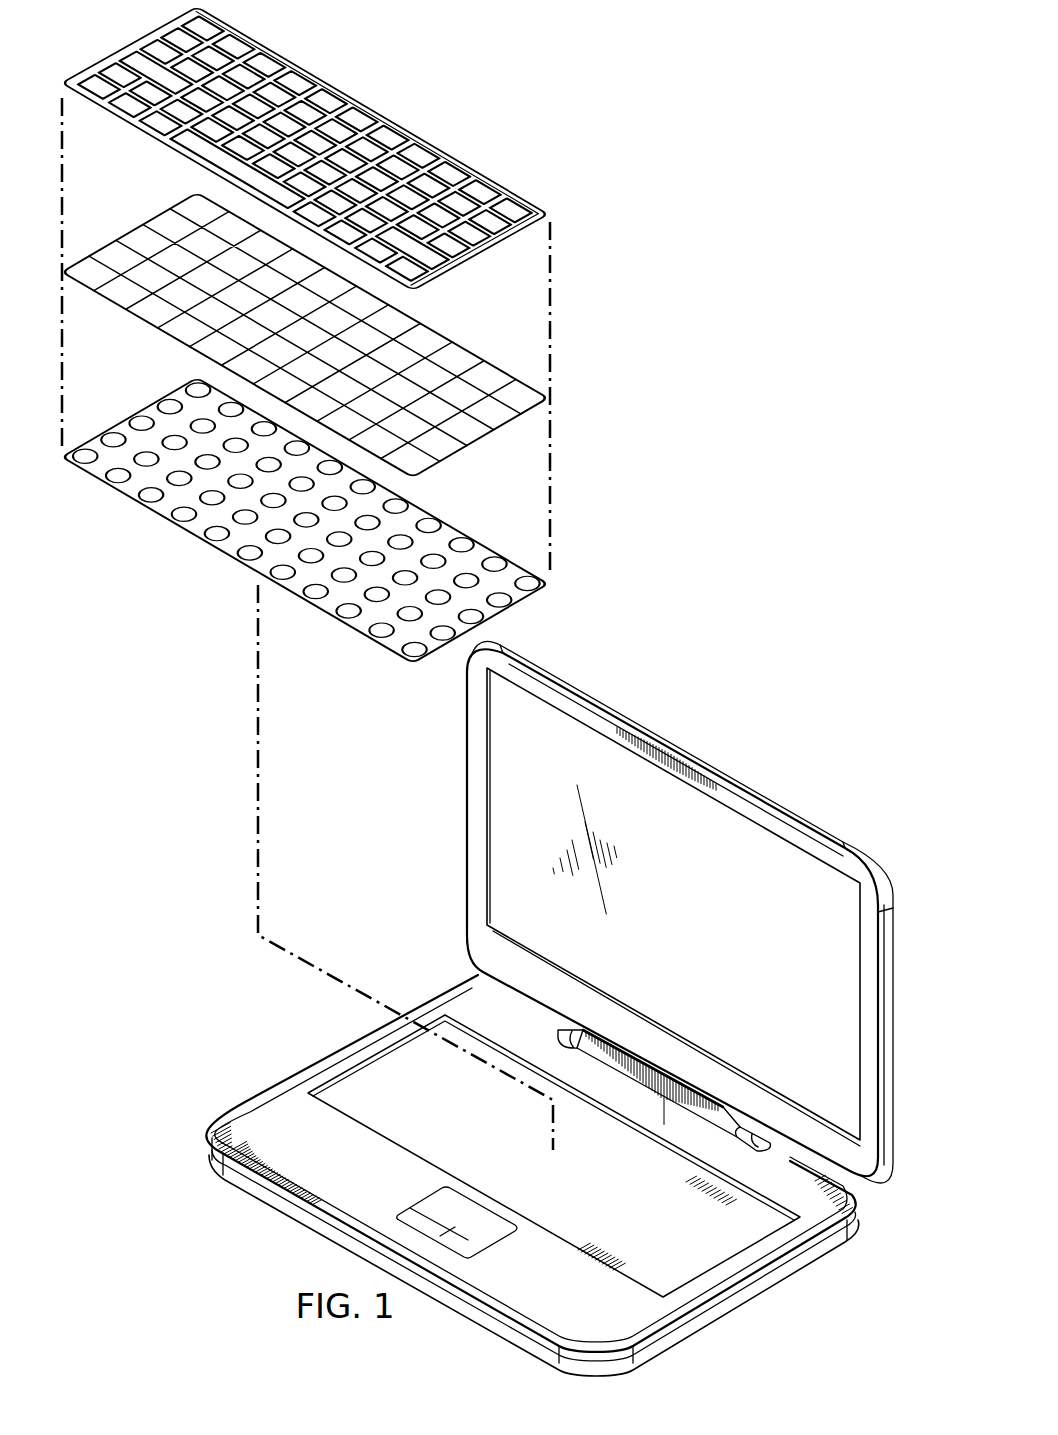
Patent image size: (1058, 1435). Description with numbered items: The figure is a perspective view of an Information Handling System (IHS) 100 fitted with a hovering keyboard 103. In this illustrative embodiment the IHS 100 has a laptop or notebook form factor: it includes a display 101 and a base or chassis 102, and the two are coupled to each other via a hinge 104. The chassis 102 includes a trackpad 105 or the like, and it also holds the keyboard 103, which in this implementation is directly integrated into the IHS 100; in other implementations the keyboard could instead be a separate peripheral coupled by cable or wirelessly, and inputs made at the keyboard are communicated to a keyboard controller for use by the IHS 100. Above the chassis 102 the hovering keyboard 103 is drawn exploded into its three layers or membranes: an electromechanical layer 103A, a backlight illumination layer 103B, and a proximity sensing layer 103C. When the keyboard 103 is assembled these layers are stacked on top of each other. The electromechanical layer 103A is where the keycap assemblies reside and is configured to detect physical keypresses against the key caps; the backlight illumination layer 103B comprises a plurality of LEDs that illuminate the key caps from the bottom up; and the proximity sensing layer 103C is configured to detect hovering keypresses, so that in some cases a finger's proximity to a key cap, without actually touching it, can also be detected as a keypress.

The Information Handling System 100 is at (779, 215).
The display 101 is at (714, 951).
The base or chassis 102 is at (800, 1277).
The hovering keyboard 103 is at (357, 62).
The electromechanical layer 103A is at (497, 243).
The backlight illumination layer 103B is at (455, 458).
The proximity sensing layer 103C is at (160, 520).
The hinge 104 is at (732, 1128).
The trackpad 105 is at (457, 1203).